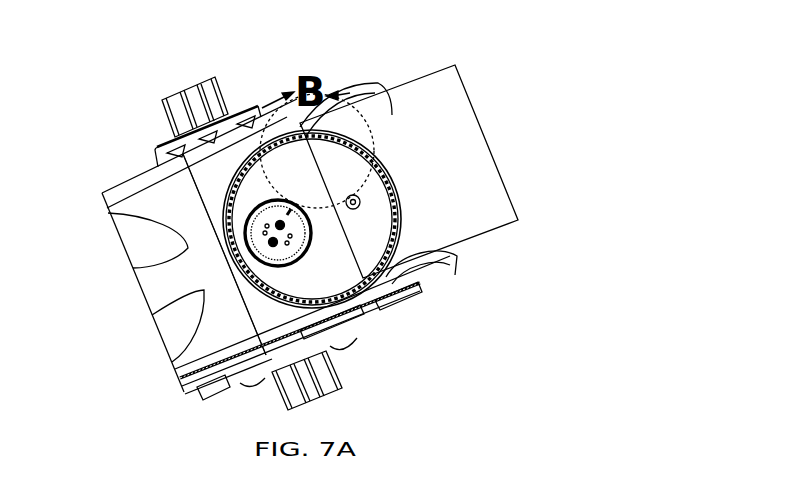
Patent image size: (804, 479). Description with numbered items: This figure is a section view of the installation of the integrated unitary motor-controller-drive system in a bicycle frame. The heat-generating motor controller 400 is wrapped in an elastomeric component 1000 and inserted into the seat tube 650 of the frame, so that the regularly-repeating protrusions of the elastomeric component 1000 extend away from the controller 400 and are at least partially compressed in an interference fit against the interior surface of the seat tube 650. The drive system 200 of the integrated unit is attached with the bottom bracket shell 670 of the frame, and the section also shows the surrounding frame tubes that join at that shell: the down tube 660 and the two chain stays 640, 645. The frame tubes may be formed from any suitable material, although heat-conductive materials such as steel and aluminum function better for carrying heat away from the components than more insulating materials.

The drive system 200 is at (385, 362).
The motor controller 400 is at (342, 284).
The chain stay 640 is at (173, 330).
The chain stay 645 is at (137, 242).
The seat tube 650 is at (228, 178).
The down tube 660 is at (462, 177).
The bottom bracket shell 670 is at (212, 283).
The elastomeric component 1000 is at (392, 260).